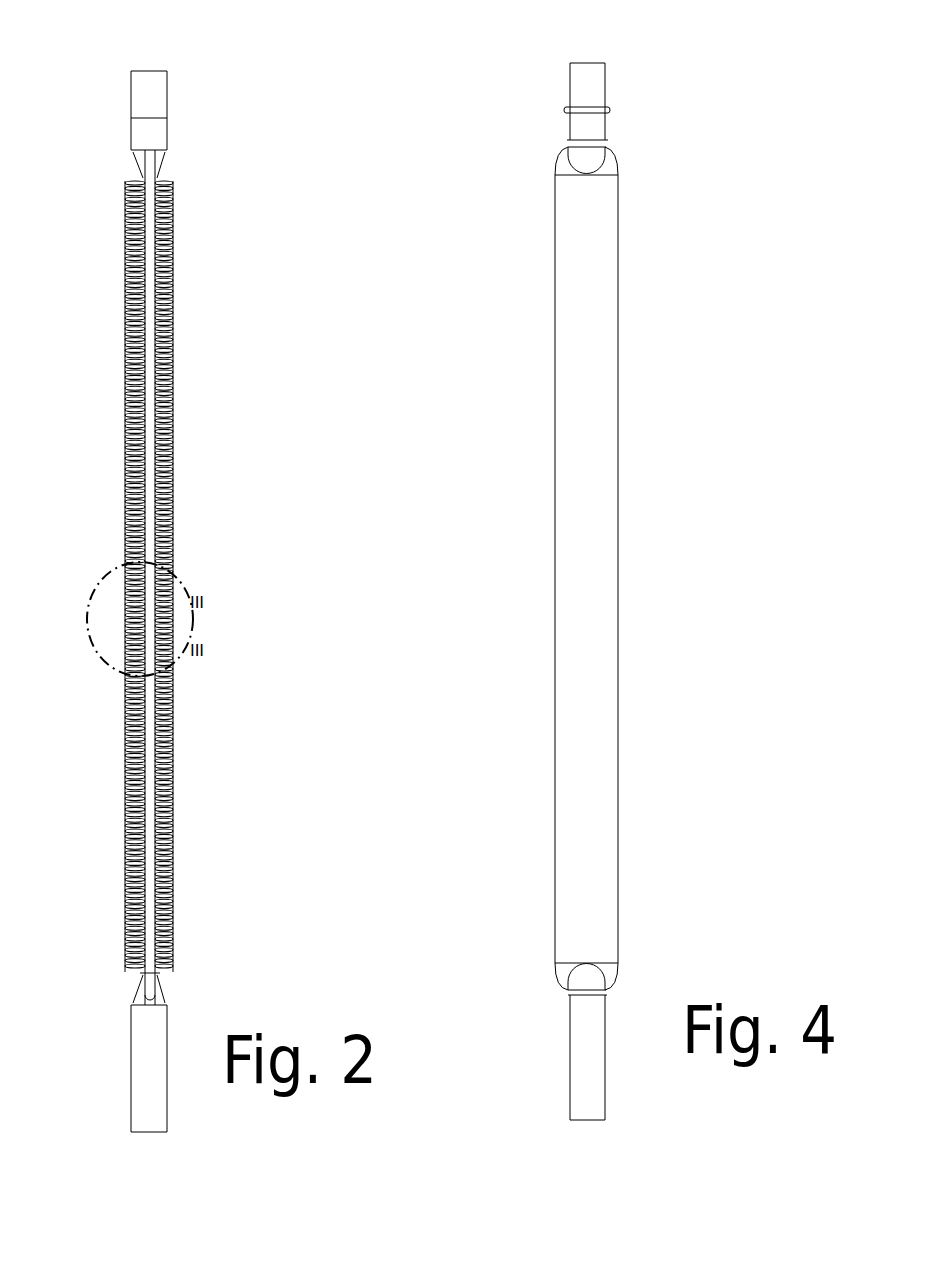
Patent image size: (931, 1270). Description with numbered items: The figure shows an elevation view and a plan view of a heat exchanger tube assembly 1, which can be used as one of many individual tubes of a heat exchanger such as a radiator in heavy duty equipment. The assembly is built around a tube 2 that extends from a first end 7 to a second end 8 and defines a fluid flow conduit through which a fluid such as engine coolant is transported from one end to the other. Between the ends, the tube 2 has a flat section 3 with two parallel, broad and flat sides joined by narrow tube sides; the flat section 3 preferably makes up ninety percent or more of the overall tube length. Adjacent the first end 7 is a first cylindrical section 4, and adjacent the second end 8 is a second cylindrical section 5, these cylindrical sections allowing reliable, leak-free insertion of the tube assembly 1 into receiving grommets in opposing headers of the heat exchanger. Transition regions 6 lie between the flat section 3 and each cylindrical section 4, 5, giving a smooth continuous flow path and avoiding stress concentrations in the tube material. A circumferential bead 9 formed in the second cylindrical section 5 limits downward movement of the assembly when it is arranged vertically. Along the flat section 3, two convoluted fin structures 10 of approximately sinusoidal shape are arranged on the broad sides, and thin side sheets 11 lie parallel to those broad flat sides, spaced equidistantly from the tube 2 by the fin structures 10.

In FIG. 2, the heat exchanger tube assembly 1 is at (236, 284).
In FIG. 4, the heat exchanger tube assembly 1 is at (670, 340).
In FIG. 2, the tube 2 is at (150, 938).
In FIG. 4, the tube 2 is at (617, 1013).
In FIG. 2, the flat section 3 is at (150, 785).
In FIG. 4, the flat section 3 is at (555, 399).
In FIG. 2, the first cylindrical section 4 is at (152, 1067).
In FIG. 4, the first cylindrical section 4 is at (580, 1056).
In FIG. 2, the second cylindrical section 5 is at (159, 130).
In FIG. 4, the second cylindrical section 5 is at (583, 86).
In FIG. 2, the transition region 6 is at (162, 167).
In FIG. 4, the transition region 6 is at (587, 158).
In FIG. 2, the first end 7 is at (127, 1131).
In FIG. 4, the first end 7 is at (563, 1120).
In FIG. 2, the second end 8 is at (170, 71).
In FIG. 4, the second end 8 is at (608, 64).
In FIG. 2, the circumferential bead 9 is at (131, 118).
In FIG. 4, the circumferential bead 9 is at (607, 110).
In FIG. 2, the convoluted fin structure 10 is at (160, 398).
In FIG. 2, the side sheet 11 is at (127, 265).
In FIG. 4, the side sheet 11 is at (590, 608).